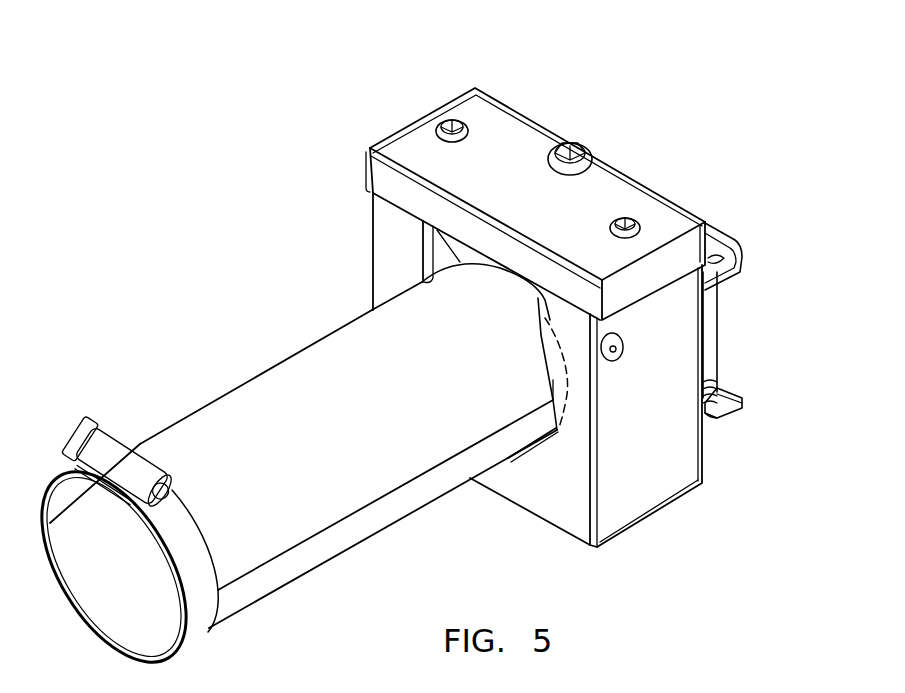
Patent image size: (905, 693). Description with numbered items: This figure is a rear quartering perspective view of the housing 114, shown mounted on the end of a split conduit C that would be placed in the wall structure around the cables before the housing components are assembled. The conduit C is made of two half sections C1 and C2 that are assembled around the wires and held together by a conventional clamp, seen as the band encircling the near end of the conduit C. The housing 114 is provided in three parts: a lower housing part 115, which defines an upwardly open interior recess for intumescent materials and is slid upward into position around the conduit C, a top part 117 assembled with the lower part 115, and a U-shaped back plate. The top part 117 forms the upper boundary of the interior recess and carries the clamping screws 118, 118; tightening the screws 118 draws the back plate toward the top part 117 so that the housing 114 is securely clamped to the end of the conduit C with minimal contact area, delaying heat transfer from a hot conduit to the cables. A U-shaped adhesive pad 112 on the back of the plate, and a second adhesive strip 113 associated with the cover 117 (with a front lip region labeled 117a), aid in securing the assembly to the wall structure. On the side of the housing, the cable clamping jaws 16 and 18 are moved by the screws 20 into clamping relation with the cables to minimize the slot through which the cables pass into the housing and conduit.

The housing 114 is at (611, 104).
The top housing portion 117 is at (505, 128).
The front flange of top plate 117a is at (440, 228).
The clamping screws 118 is at (452, 120).
The second adhesive strip 113 is at (385, 182).
The U-shaped adhesive pad 112 is at (393, 247).
The lower housing part 115 is at (670, 473).
The cable clamping jaw 16 is at (726, 236).
The screws 20 is at (710, 335).
The cable clamping jaw 18 is at (728, 413).
The conduit C is at (220, 367).
The split conduit half section C1 is at (313, 360).
The split conduit half section C2 is at (402, 514).